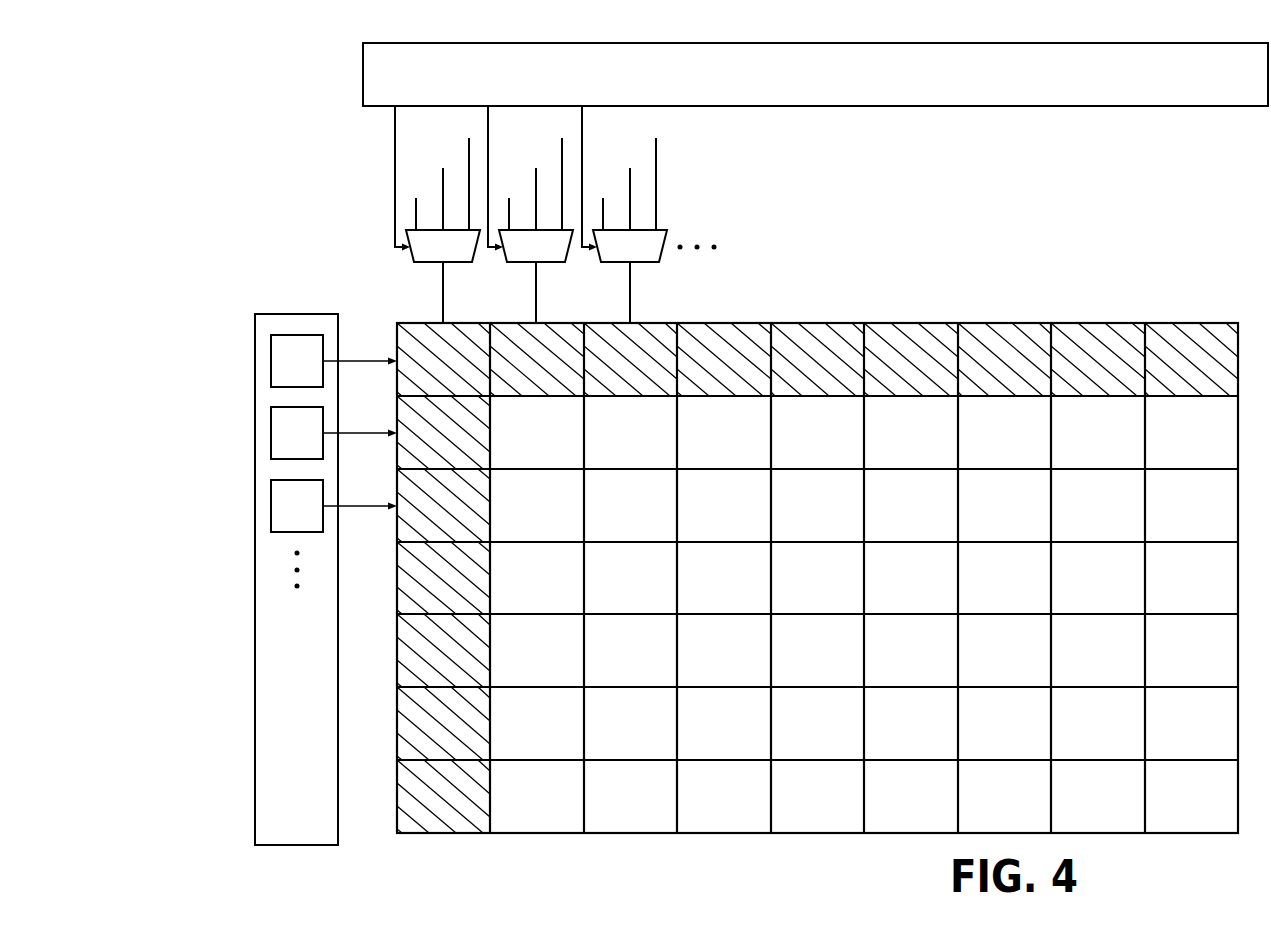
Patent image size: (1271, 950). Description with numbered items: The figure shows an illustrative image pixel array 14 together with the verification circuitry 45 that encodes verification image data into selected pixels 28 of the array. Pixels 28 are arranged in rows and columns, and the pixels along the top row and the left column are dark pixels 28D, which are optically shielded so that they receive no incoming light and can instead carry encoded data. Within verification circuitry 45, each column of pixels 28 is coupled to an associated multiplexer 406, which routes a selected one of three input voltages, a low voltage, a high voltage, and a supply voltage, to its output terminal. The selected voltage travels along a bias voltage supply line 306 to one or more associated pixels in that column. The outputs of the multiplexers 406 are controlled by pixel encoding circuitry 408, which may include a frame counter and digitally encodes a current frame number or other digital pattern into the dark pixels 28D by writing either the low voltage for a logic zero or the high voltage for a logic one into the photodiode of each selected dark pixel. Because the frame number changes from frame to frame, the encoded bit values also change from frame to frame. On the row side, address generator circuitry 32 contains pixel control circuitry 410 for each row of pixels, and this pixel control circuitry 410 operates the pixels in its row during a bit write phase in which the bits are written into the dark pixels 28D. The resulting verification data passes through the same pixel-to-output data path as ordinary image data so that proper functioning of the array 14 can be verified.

The pixel encoding circuitry 408 is at (1154, 106).
The verification circuitry 45 is at (338, 43).
The multiplexer 406 is at (617, 264).
The bias voltage supply line 306 is at (446, 295).
The address generator circuitry 32 is at (277, 698).
The pixel control circuitry 410 is at (275, 360).
The array 14 is at (1188, 279).
The pixels 28 is at (723, 825).
The dark pixels 28D is at (1002, 335).